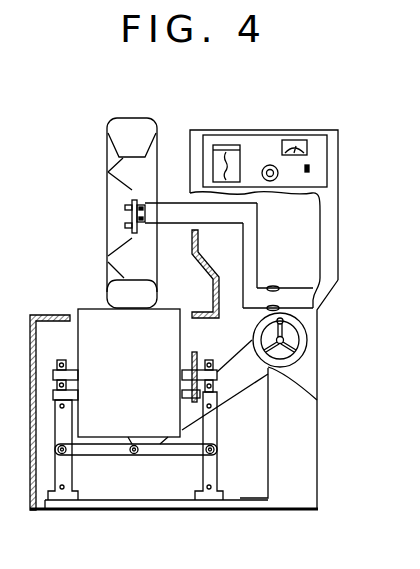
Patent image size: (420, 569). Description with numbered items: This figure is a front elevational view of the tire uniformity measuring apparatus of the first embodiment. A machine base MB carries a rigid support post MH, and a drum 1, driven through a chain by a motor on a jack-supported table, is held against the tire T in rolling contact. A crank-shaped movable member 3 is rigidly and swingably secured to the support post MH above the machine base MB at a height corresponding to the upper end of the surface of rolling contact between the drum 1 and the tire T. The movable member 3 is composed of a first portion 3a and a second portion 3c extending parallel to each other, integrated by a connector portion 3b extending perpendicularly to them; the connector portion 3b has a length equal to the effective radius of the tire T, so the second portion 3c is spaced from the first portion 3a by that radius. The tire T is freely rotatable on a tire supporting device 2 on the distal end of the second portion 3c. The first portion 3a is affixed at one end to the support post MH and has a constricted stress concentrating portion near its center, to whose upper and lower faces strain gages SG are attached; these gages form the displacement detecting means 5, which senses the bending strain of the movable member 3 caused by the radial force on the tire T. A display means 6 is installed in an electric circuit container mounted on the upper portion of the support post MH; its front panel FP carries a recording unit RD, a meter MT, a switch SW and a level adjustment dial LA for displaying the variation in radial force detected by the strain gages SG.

The tire T is at (132, 118).
The drum 1 is at (104, 330).
The tire supporting device 2 is at (127, 212).
The crank-shaped movable member 3 is at (258, 247).
The first portion 3a is at (300, 305).
The connector portion 3b is at (247, 258).
The second portion 3c is at (170, 217).
The displacement detecting means 5 is at (338, 243).
The display means 6 is at (287, 105).
The strain gages SG is at (277, 287).
The recording unit RD is at (225, 145).
The front panel FP is at (255, 145).
The meter MT is at (300, 140).
The switch SW is at (312, 168).
The level adjustment dial LA is at (278, 176).
The support post MH is at (293, 470).
The machine base MB is at (118, 505).